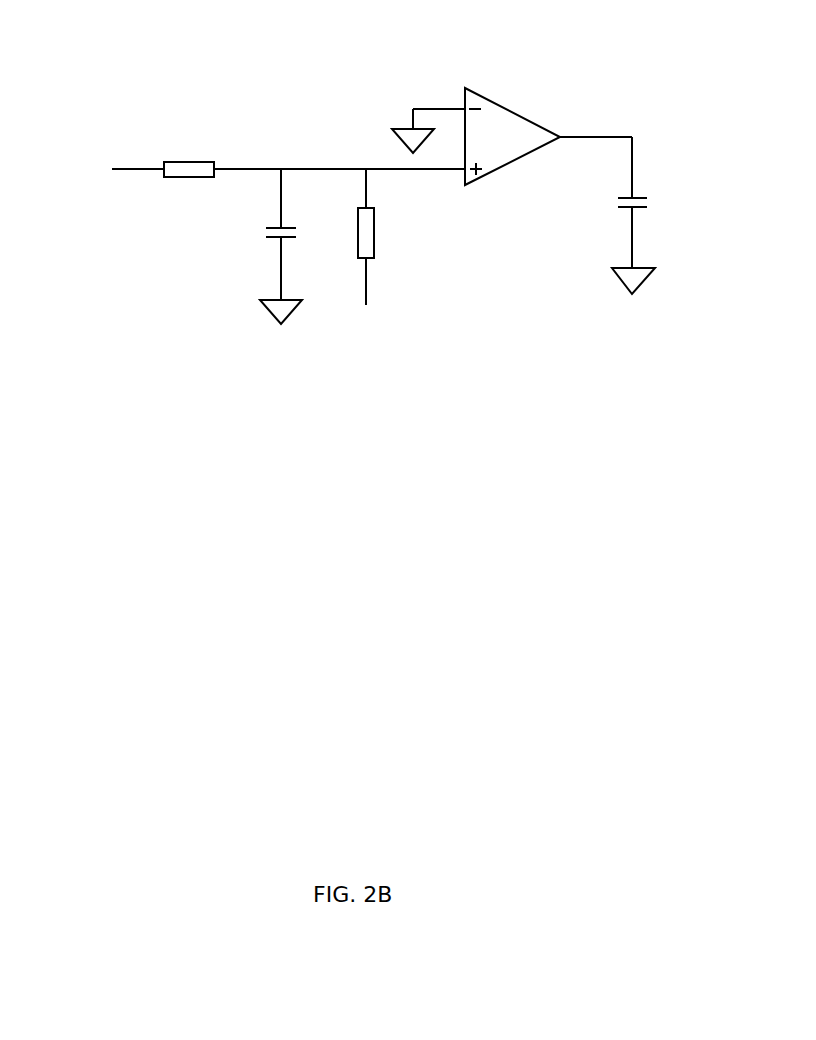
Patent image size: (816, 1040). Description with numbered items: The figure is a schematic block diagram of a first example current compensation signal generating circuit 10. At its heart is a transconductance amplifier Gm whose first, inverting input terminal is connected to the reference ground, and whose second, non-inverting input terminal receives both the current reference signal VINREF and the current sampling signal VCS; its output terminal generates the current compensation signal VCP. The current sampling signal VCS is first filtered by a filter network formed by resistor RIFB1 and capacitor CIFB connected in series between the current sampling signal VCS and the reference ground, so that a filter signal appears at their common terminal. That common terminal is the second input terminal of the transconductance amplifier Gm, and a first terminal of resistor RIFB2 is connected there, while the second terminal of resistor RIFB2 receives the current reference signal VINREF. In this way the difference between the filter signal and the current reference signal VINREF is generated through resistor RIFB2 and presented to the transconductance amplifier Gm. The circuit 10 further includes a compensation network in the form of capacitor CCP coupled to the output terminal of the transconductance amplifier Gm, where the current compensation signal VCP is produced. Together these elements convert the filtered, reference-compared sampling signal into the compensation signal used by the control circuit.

The current compensation signal generating circuit 10 is at (597, 40).
The current sampling signal VCS is at (114, 164).
The resistor RIFB1 is at (189, 152).
The capacitor CIFB is at (257, 246).
The resistor RIFB2 is at (397, 213).
The current reference signal VINREF is at (373, 295).
The transconductance amplifier Gm is at (476, 136).
The current compensation signal VCP is at (596, 151).
The capacitor CCP is at (613, 241).